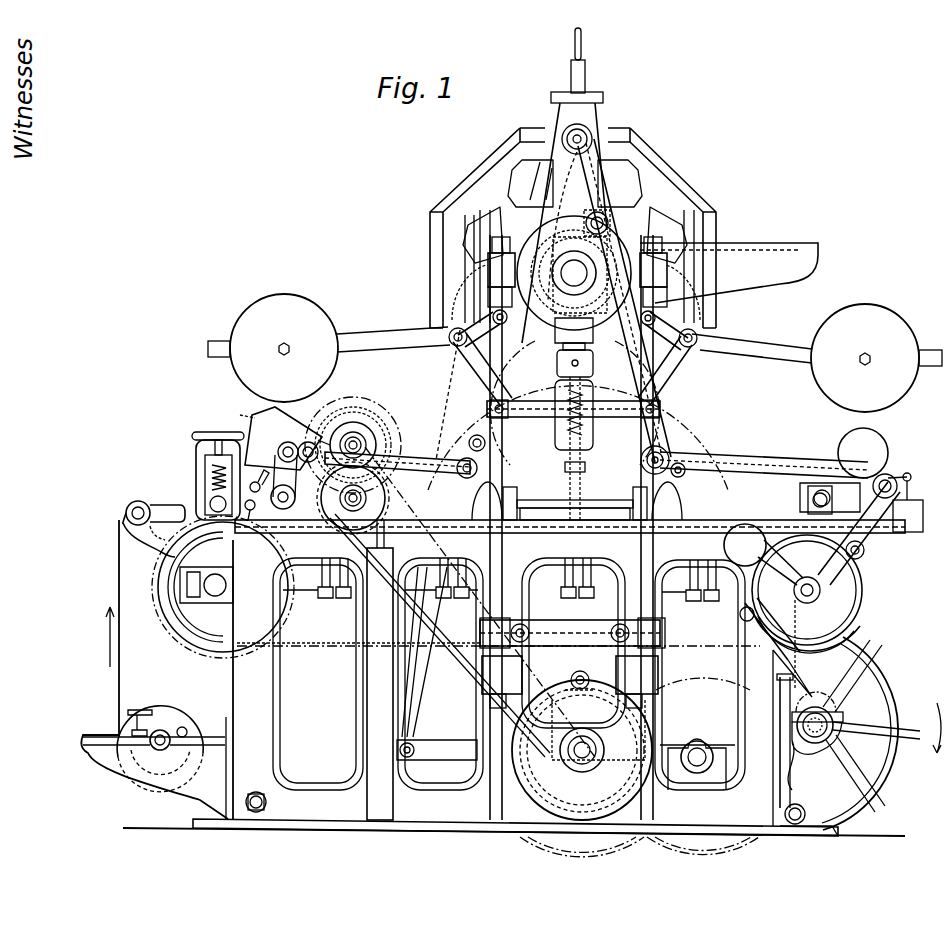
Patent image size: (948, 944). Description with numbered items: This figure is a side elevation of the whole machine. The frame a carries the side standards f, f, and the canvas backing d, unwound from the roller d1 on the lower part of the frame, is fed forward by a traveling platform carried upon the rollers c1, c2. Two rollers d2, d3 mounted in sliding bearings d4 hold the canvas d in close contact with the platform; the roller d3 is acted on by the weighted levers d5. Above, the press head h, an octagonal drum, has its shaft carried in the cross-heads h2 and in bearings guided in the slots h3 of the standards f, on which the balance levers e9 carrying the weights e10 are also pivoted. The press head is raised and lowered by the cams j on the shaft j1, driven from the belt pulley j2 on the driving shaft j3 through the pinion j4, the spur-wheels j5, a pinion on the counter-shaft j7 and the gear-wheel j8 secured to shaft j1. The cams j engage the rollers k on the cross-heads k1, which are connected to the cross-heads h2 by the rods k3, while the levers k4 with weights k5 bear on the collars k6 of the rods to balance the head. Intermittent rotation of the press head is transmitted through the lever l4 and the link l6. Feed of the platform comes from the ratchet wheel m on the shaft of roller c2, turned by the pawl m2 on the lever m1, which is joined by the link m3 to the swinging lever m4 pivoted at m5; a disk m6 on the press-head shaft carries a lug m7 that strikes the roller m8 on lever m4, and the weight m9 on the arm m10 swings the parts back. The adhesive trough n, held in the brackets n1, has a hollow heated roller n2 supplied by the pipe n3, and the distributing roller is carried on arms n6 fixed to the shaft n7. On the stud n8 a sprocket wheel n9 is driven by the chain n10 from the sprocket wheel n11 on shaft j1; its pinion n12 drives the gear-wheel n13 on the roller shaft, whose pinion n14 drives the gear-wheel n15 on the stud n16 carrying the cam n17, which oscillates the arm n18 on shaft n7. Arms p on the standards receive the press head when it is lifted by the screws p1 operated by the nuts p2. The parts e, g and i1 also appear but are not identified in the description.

The frame a is at (505, 669).
The roller c1 is at (170, 612).
The roller c2 is at (866, 622).
The canvas backing d is at (120, 678).
The roller d1 is at (160, 726).
The roller d2 is at (185, 500).
The roller d3 is at (848, 493).
The sliding bearings d4 is at (200, 495).
The weighted levers d5 is at (910, 455).
The bed plate e is at (607, 503).
The balance levers e9 is at (808, 460).
The weights e10 is at (627, 624).
The standards f is at (570, 507).
The bed block g is at (553, 515).
The press head h is at (478, 195).
The cross-heads h2 is at (577, 272).
The slots h3 is at (562, 335).
The frame side plate i1 is at (696, 198).
The cams j is at (648, 800).
The shaft j1 is at (582, 772).
The belt pulley j2 is at (895, 655).
The driving shaft j3 is at (840, 710).
The pinion j4 is at (812, 705).
The spur-wheels j5 is at (690, 660).
The counter-shaft j7 is at (697, 748).
The gear-wheel j8 is at (520, 840).
The rollers k is at (590, 680).
The cross-heads k1 is at (570, 475).
The rods k3 is at (508, 440).
The levers k4 is at (385, 350).
The weights k5 is at (575, 353).
The collars k6 is at (668, 292).
The lever l4 is at (447, 380).
The link l6 is at (536, 196).
The ratchet wheel m is at (858, 596).
The lever m1 is at (864, 550).
The pawl m2 is at (862, 560).
The link m3 is at (728, 460).
The swinging lever m4 is at (553, 383).
The pivot m5 is at (598, 132).
The disk m6 is at (540, 350).
The lug or projection m7 is at (552, 230).
The roller or tappet m8 is at (610, 222).
The weight m9 is at (763, 554).
The arm m10 is at (776, 643).
The trough n is at (243, 406).
The brackets n1 is at (283, 438).
The roller n2 is at (392, 418).
The pipe n3 is at (360, 430).
The arms n6 is at (305, 500).
The shaft n7 is at (283, 510).
The stud n8 is at (340, 528).
The sprocket wheel n9 is at (369, 536).
The sprocket chain n10 is at (462, 675).
The sprocket wheel n11 is at (500, 785).
The pinion n12 is at (427, 480).
The gear-wheel n13 is at (360, 430).
The pinion n14 is at (418, 455).
The gear-wheel n15 is at (290, 440).
The stud n16 is at (308, 440).
The cam n17 is at (322, 430).
The arm n18 is at (254, 479).
The arms p is at (729, 273).
The lifting screws p1 is at (555, 455).
The nuts p2 is at (593, 365).